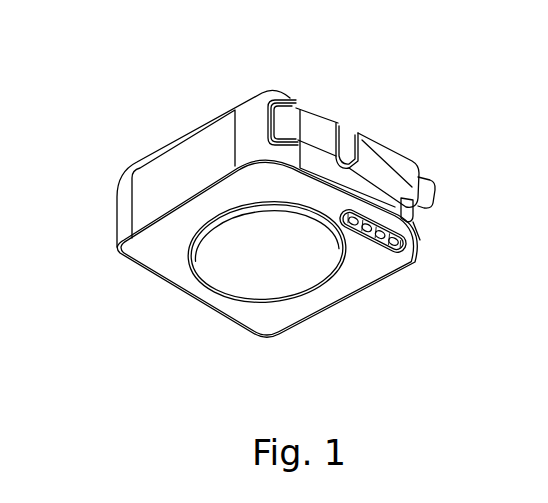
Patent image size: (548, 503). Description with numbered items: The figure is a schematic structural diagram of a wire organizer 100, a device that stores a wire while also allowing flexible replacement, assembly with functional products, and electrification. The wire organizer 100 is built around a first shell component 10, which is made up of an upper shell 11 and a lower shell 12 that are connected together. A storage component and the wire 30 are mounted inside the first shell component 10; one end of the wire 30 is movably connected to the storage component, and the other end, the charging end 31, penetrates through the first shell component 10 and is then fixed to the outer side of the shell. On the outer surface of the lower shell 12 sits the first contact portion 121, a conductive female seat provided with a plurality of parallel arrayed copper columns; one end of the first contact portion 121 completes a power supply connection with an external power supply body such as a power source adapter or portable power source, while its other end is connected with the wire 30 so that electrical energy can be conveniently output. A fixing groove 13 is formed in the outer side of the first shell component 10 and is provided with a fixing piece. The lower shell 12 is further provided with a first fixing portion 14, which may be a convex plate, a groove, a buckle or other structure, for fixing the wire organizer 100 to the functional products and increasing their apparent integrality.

The wire organizer 100 is at (70, 36).
The first shell component 10 is at (50, 243).
The upper shell 11 is at (145, 198).
The lower shell 12 is at (137, 253).
The first contact portion 121 is at (390, 248).
The fixing groove 13 is at (415, 218).
The first fixing portion 14 is at (243, 275).
The wire 30 is at (325, 127).
The charging end 31 is at (425, 185).